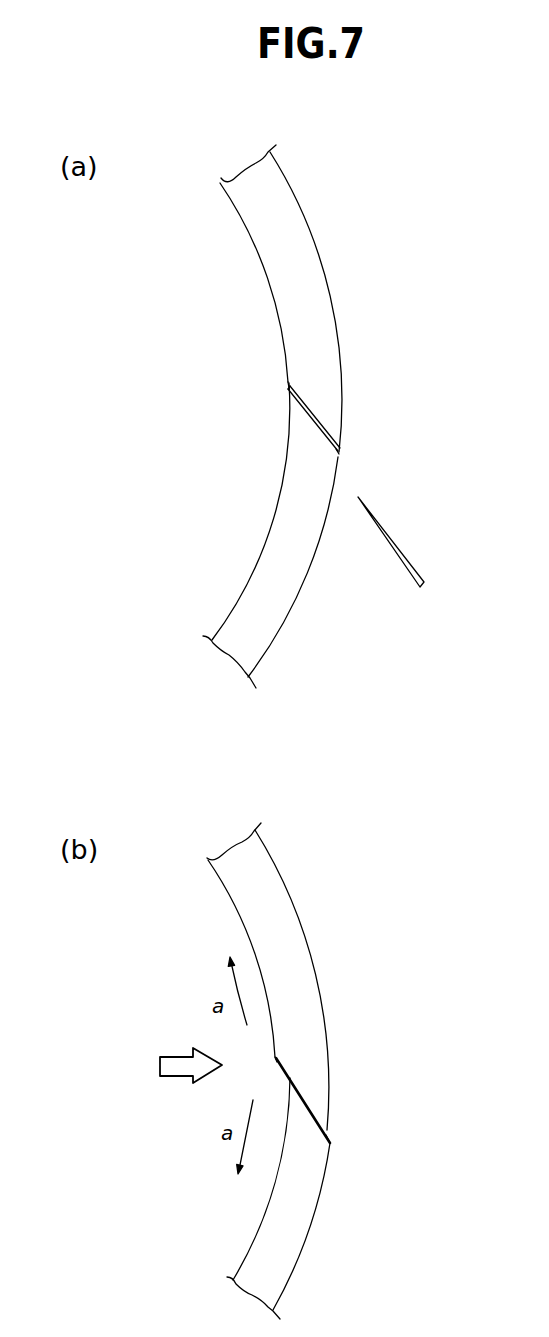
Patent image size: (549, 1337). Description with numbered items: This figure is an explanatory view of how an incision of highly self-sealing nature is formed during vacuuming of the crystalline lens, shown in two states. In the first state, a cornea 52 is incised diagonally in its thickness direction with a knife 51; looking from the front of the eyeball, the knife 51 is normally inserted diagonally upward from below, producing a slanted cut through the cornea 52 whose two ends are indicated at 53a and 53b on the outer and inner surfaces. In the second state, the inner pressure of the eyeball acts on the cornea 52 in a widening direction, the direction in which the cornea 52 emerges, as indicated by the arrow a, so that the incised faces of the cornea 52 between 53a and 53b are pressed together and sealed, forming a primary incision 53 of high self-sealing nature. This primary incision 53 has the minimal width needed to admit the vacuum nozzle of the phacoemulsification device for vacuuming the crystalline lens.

The knife 51 is at (398, 560).
The cornea 52 is at (325, 329).
The primary incision 53 is at (358, 405).
The slit end on outer edge 53a is at (338, 456).
The slit end on inner edge 53b is at (288, 382).